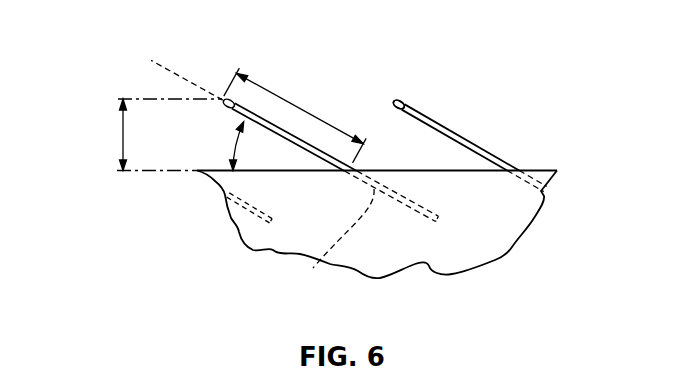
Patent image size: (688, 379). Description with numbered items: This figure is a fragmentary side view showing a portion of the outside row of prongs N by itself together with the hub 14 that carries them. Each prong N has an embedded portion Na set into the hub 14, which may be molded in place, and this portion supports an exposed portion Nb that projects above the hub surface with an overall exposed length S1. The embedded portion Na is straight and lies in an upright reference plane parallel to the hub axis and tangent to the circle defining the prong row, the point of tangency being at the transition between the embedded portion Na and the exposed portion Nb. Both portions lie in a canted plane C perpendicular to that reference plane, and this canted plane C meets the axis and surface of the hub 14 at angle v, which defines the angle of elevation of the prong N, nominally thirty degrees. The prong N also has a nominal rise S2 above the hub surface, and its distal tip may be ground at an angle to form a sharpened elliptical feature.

The hub 14 is at (517, 218).
The prong N is at (379, 161).
The embedded portion Na is at (337, 246).
The exposed portion Nb is at (308, 152).
The canted plane C is at (174, 72).
The exposed length S1 is at (302, 110).
The nominal rise S2 is at (123, 135).
The angle of elevation v is at (237, 140).